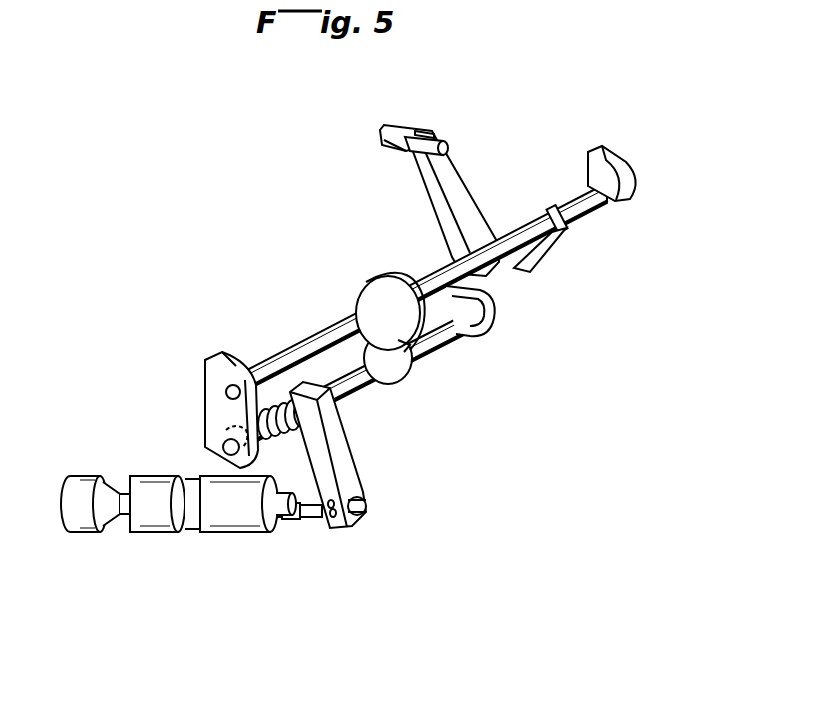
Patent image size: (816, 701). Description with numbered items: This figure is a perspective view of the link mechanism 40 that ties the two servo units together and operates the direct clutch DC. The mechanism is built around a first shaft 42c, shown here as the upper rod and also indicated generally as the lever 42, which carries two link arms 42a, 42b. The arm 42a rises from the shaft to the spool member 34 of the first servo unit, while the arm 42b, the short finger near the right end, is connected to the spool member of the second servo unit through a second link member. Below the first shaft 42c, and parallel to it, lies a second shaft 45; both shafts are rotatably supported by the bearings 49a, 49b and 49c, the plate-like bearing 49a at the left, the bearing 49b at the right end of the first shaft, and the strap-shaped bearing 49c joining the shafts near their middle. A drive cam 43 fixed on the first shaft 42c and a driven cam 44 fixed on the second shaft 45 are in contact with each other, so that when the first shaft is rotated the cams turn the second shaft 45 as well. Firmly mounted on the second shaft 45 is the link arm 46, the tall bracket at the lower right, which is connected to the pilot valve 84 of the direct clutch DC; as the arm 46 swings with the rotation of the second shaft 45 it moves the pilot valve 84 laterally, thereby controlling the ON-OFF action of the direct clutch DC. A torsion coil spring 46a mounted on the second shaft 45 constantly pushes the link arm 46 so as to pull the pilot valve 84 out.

The spool member 34 is at (392, 128).
The link mechanism 40 is at (546, 98).
The lever 42 is at (494, 230).
The link arm 42a is at (462, 190).
The link arm 42b is at (552, 258).
The first shaft 42c is at (316, 343).
The drive cam 43 is at (392, 277).
The driven cam 44 is at (412, 378).
The second shaft 45 is at (367, 394).
The link arm 46 is at (348, 468).
The torsion coil spring 46a is at (300, 433).
The bearing 49a is at (208, 414).
The bearing 49b is at (626, 172).
The bearing 49c is at (486, 317).
The pilot valve 84 is at (298, 522).
The direct clutch DC is at (199, 545).